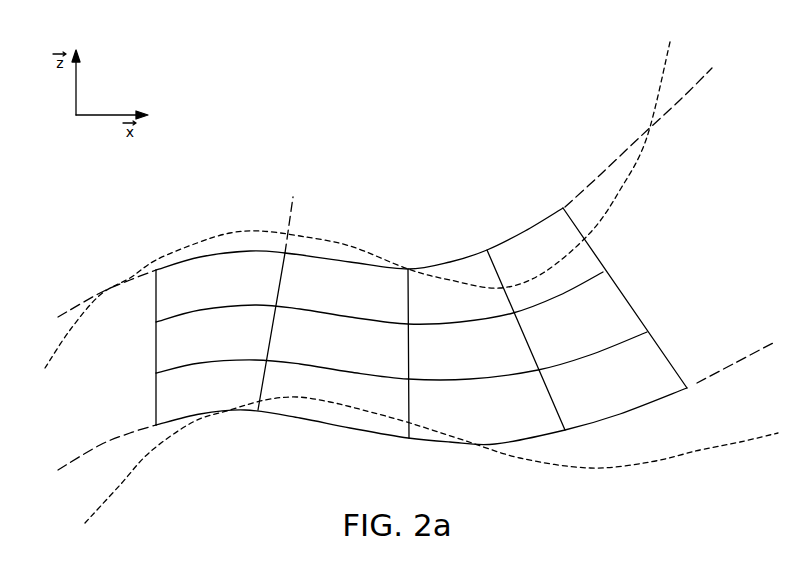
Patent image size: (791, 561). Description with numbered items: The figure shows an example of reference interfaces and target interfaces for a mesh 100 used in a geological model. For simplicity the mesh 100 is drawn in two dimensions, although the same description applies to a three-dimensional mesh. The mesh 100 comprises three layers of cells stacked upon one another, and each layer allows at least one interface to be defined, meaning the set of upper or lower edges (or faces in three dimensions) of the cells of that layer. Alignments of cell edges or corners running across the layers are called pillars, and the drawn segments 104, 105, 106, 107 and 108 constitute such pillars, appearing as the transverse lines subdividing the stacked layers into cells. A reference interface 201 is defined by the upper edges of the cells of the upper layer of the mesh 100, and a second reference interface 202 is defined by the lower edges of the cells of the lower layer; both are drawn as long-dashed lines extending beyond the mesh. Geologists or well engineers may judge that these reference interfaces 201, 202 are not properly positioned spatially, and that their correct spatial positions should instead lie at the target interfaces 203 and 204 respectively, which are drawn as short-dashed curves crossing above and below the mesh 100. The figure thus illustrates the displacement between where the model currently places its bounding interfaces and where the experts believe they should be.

The mesh 100 is at (630, 279).
The pillar segment 104 is at (158, 402).
The pillar segment 105 is at (265, 385).
The pillar segment 106 is at (408, 427).
The pillar segment 107 is at (560, 407).
The pillar segment 108 is at (668, 370).
The reference interface 201 is at (695, 88).
The reference interface 202 is at (748, 355).
The target interface 203 is at (672, 48).
The target interface 204 is at (728, 452).